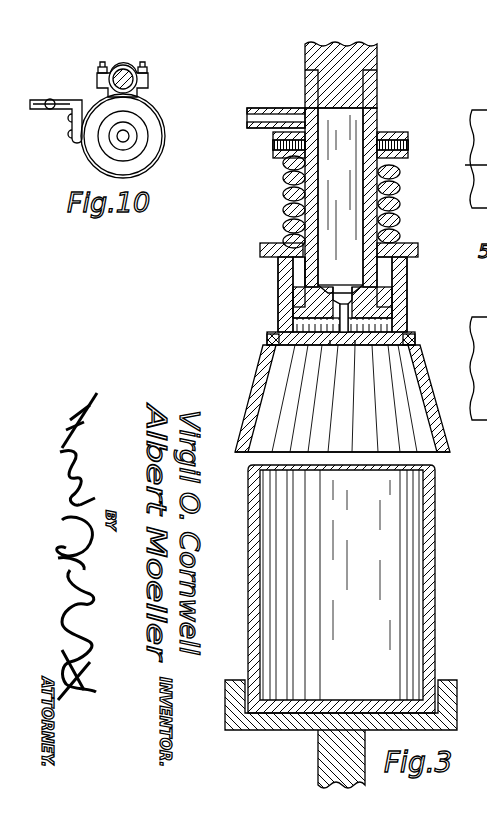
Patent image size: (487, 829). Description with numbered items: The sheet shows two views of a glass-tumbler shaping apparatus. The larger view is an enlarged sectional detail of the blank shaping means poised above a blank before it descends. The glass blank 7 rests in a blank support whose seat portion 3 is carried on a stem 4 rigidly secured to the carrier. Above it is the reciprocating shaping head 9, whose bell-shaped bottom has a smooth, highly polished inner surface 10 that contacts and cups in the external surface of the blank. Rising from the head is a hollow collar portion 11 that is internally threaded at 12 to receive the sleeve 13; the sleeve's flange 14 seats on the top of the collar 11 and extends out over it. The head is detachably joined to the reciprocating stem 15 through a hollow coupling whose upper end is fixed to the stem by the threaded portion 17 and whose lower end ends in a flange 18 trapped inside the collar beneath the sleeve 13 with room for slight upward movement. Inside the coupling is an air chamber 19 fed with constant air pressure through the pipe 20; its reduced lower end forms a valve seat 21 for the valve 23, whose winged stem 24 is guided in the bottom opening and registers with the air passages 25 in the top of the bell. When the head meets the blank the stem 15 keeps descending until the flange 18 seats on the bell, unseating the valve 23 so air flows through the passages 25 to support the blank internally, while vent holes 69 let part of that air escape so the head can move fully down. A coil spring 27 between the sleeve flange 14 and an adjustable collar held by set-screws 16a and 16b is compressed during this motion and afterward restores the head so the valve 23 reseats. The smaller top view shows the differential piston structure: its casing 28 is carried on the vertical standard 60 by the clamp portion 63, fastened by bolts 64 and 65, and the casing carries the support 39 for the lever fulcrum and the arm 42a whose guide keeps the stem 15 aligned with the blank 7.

In FIG. 3, the seat portion 3 is at (457, 703).
In FIG. 3, the stem 4 is at (366, 782).
In FIG. 3, the glass blank 7 is at (435, 550).
In FIG. 3, the shaping head 9 is at (246, 440).
In FIG. 3, the inner surface 10 is at (425, 394).
In FIG. 3, the collar portion 11 is at (408, 300).
In FIG. 3, the internal thread 12 is at (400, 282).
In FIG. 3, the sleeve 13 is at (385, 268).
In FIG. 3, the flange 14 is at (414, 246).
In FIG. 3, the reciprocating stem 15 is at (367, 56).
In FIG. 3, the set-screw 16a is at (408, 146).
In FIG. 3, the set-screw 16b is at (273, 148).
In FIG. 3, the threaded portion 17 is at (366, 86).
In FIG. 3, the flange 18 is at (382, 312).
In FIG. 3, the air chamber 19 is at (352, 136).
In FIG. 3, the pipe 20 is at (262, 108).
In FIG. 3, the valve seat 21 is at (300, 292).
In FIG. 3, the valve 23 is at (298, 247).
In FIG. 3, the winged stem 24 is at (340, 312).
In FIG. 3, the air passages 25 is at (356, 344).
In FIG. 3, the coil spring 27 is at (397, 188).
In FIG. 3, the vent holes 69 is at (267, 340).
In FIG. 10, the casing 28 is at (163, 124).
In FIG. 10, the support 39 is at (48, 110).
In FIG. 10, the arm 42a is at (46, 100).
In FIG. 10, the vertical standard 60 is at (124, 69).
In FIG. 10, the clamp portion 63 is at (132, 70).
In FIG. 10, the bolt 64 is at (101, 67).
In FIG. 10, the bolt 65 is at (147, 70).